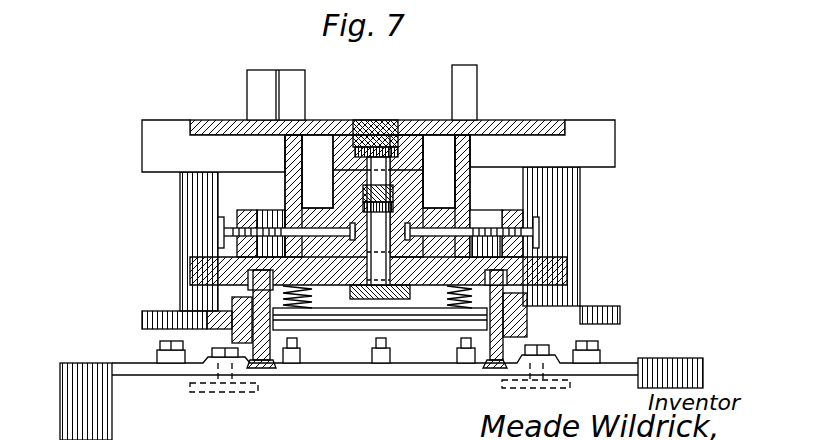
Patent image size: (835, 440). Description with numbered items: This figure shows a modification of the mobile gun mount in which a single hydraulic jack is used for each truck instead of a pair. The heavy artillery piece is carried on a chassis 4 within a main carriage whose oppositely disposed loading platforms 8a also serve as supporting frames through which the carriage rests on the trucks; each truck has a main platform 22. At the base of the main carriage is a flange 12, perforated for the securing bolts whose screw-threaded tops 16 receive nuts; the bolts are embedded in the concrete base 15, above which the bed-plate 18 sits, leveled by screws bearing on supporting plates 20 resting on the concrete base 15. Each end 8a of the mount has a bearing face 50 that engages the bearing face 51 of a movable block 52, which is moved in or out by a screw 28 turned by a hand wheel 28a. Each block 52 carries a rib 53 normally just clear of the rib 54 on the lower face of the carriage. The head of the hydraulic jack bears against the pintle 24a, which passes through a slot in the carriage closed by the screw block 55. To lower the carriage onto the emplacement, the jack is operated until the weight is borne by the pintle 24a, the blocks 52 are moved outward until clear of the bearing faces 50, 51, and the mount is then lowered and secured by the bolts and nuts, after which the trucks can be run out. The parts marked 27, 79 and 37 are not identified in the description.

The chassis 4 is at (306, 80).
The loading platform 8a is at (421, 119).
The screw block 55 is at (378, 119).
The bearing face 50 is at (474, 117).
The pintle 24a is at (372, 165).
The movable block 52 is at (298, 170).
The rib 54 is at (332, 186).
The rib 53 is at (285, 205).
The bearing face 51 is at (423, 178).
The screw 28 is at (222, 218).
The hand wheel 28a is at (218, 232).
The main platform 22 is at (568, 262).
The yoke 27 is at (527, 303).
The flange 12 is at (617, 308).
The flange 79 is at (205, 340).
The screw-threaded top 16 is at (160, 341).
The bed-plate 18 is at (684, 358).
The concrete base 15 is at (703, 377).
The supporting plate 20 is at (213, 392).
The shaft 37 is at (388, 285).